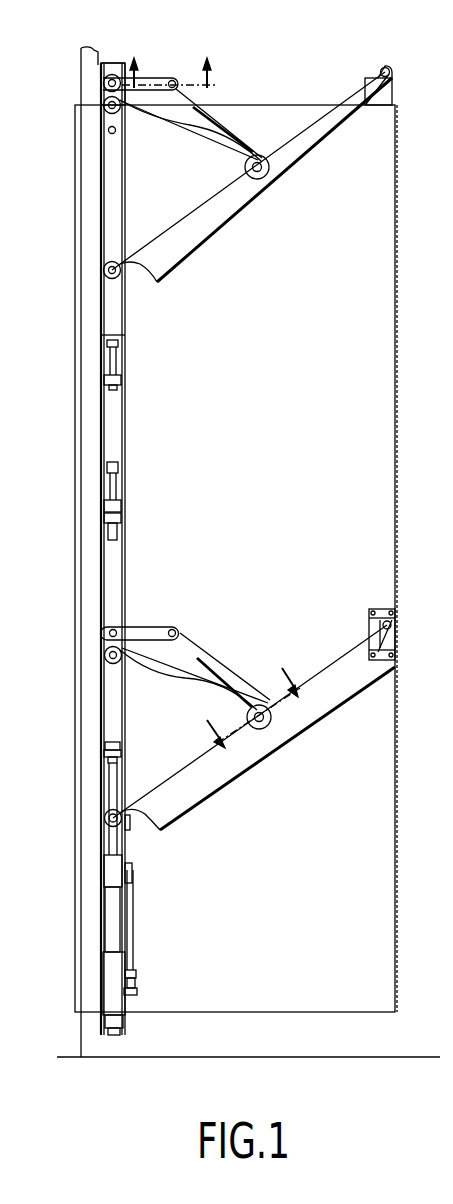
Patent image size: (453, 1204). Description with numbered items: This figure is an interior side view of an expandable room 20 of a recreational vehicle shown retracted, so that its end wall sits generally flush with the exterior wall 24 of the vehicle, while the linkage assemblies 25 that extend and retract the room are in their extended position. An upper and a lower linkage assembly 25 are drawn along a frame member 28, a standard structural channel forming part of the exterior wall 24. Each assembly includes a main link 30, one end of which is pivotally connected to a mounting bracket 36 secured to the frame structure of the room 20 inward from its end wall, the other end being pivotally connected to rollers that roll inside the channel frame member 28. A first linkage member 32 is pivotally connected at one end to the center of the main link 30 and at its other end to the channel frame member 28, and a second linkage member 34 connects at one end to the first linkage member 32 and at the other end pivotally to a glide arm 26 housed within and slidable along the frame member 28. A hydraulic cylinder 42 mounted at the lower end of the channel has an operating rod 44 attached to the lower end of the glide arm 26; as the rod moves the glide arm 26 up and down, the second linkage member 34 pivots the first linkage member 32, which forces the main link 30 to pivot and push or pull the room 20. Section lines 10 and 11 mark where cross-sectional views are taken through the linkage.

The section line 10- 10 is at (243, 695).
The section line 11- 11 is at (169, 57).
The expandable room 20 is at (336, 411).
The exterior wall 24 is at (88, 1047).
The linkage assembly 25 is at (226, 232).
The glide arm 26 is at (112, 450).
The frame member 28 is at (125, 557).
The main link 30 is at (172, 258).
The first linkage member 32 is at (222, 123).
The second linkage member 34 is at (140, 96).
The mounting bracket 36 is at (368, 83).
The hydraulic cylinder 42 is at (120, 1000).
The operating rod 44 is at (113, 789).